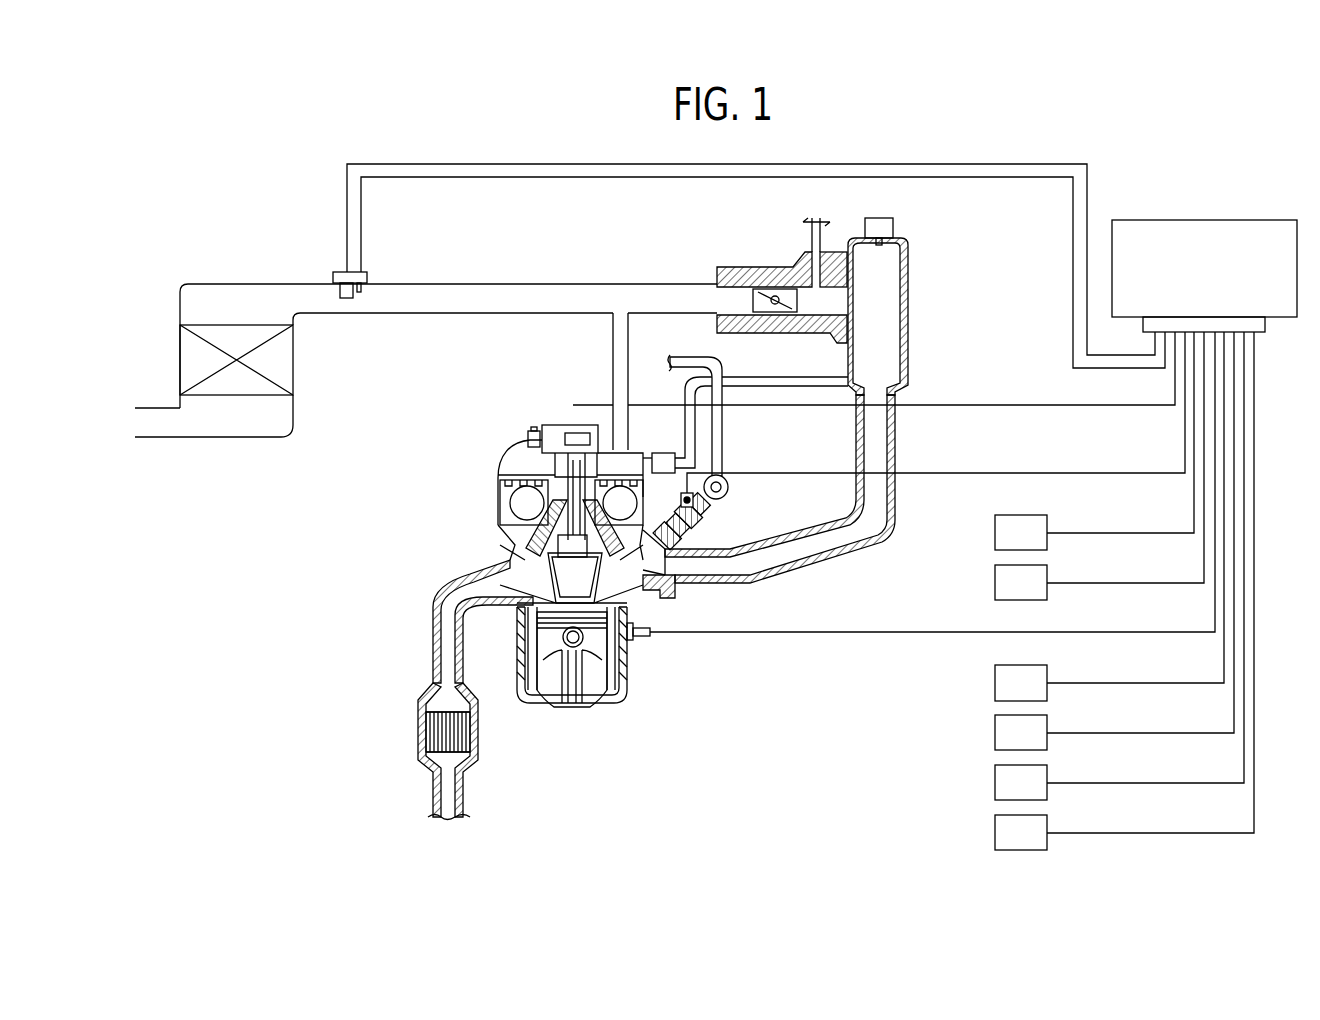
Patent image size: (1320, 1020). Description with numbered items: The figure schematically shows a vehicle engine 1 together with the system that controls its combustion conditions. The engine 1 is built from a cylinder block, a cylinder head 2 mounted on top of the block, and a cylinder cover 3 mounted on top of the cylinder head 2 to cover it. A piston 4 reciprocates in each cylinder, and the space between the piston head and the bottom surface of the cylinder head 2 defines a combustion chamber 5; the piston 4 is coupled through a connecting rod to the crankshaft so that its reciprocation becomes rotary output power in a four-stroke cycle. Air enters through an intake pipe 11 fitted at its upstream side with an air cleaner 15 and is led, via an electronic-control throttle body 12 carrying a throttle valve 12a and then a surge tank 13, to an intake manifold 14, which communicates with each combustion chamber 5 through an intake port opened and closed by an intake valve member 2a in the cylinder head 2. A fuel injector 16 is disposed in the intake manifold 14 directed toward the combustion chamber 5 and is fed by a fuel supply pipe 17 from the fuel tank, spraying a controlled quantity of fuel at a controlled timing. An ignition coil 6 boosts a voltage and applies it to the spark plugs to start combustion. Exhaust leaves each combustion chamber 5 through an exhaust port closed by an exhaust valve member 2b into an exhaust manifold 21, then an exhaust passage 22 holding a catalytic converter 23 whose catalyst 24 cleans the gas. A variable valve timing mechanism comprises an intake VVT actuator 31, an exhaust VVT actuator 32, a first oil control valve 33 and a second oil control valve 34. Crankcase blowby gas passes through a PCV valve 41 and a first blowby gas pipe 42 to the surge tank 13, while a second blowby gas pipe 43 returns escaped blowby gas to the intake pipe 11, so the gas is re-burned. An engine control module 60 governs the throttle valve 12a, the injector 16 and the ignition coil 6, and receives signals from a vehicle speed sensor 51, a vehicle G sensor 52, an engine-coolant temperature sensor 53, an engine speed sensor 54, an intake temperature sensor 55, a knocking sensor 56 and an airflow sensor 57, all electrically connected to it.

The engine 1 is at (470, 513).
The cylinder head 2 is at (500, 557).
The intake valve member 2a is at (650, 600).
The exhaust valve member 2b is at (470, 578).
The cylinder cover 3 is at (518, 450).
The piston 4 is at (555, 645).
The combustion chamber 5 is at (590, 640).
The ignition coil 6 is at (560, 425).
The intake pipe 11 is at (522, 284).
The electronic-control throttle body 12 is at (760, 267).
The throttle valve 12a is at (778, 305).
The surge tank 13 is at (910, 300).
The intake manifold 14 is at (885, 532).
The air cleaner 15 is at (195, 355).
The fuel injector 16 is at (690, 530).
The fuel supply pipe 17 is at (724, 437).
The exhaust manifold 21 is at (440, 600).
The exhaust passage 22 is at (435, 655).
The catalytic converter 23 is at (420, 693).
The catalyst 24 is at (437, 742).
The intake VVT actuator 31 is at (620, 497).
The exhaust VVT actuator 32 is at (525, 495).
The first oil control valve 33 is at (995, 531).
The second oil control valve 34 is at (995, 581).
The PCV valve 41 is at (660, 456).
The first blowby gas pipe 42 is at (768, 373).
The second blowby gas pipe 43 is at (613, 355).
The vehicle speed sensor 51 is at (995, 681).
The vehicle G sensor 52 is at (995, 731).
The engine-coolant temperature sensor 53 is at (995, 781).
The engine speed sensor 54 is at (995, 831).
The intake temperature sensor 55 is at (366, 289).
The knocking sensor 56 is at (642, 645).
The airflow sensor 57 is at (346, 300).
The engine control module 60 is at (1210, 220).